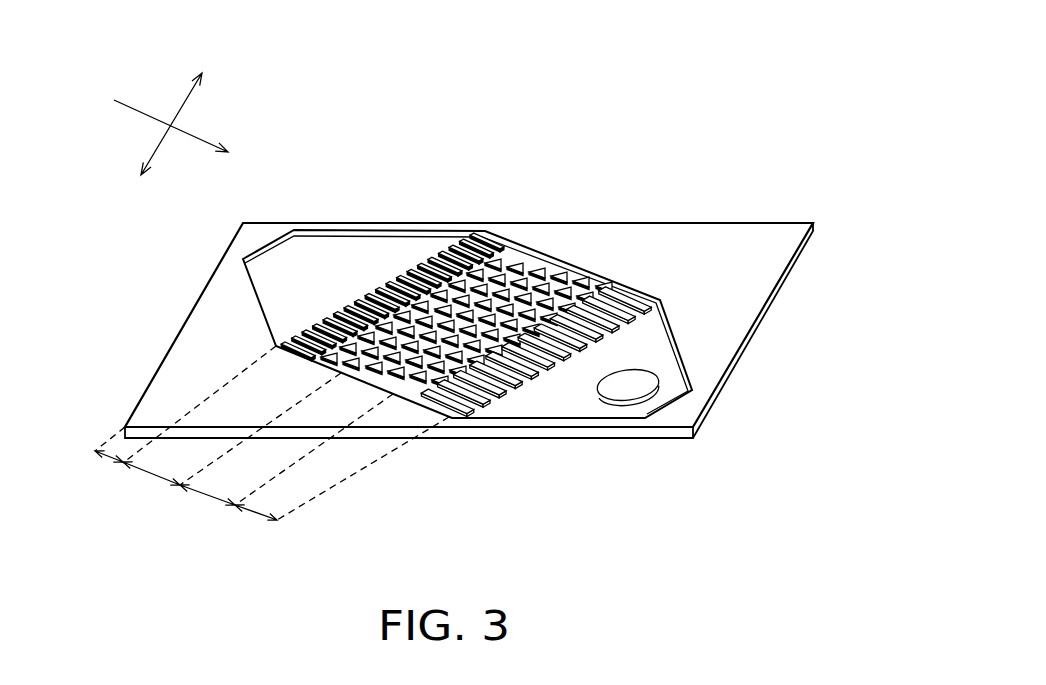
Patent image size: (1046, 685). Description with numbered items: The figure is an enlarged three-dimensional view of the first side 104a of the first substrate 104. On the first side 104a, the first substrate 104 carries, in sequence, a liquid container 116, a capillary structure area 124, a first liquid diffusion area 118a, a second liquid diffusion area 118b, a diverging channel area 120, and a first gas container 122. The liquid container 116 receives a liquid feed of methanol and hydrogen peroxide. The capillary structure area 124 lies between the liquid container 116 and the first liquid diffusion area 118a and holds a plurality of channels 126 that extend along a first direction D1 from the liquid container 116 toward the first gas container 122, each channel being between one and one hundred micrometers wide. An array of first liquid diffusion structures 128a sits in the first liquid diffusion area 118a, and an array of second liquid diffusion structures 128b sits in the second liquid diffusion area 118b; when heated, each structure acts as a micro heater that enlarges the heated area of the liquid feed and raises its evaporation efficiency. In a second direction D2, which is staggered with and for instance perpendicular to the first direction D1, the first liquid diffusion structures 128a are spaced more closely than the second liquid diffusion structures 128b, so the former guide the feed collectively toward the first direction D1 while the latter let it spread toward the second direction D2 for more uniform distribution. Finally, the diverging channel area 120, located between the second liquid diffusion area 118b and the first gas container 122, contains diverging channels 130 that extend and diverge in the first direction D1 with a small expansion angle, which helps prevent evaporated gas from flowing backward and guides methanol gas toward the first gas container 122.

The first substrate 104 is at (777, 292).
The first side 104a is at (716, 323).
The liquid container 116 is at (295, 315).
The first liquid diffusion area 118a is at (142, 472).
The second liquid diffusion area 118b is at (200, 492).
The diverging channel area 120 is at (252, 513).
The first gas container 122 is at (647, 353).
The capillary structure area 124 is at (105, 458).
The channels 126 is at (495, 232).
The first liquid diffusion structures 128a is at (533, 255).
The second liquid diffusion structures 128b is at (585, 280).
The diverging channels 130 is at (633, 303).
The first direction D1 is at (187, 136).
The second direction D2 is at (180, 104).